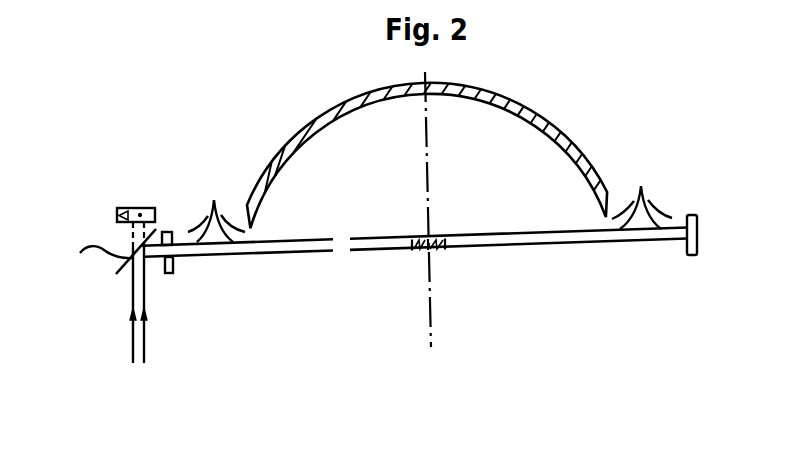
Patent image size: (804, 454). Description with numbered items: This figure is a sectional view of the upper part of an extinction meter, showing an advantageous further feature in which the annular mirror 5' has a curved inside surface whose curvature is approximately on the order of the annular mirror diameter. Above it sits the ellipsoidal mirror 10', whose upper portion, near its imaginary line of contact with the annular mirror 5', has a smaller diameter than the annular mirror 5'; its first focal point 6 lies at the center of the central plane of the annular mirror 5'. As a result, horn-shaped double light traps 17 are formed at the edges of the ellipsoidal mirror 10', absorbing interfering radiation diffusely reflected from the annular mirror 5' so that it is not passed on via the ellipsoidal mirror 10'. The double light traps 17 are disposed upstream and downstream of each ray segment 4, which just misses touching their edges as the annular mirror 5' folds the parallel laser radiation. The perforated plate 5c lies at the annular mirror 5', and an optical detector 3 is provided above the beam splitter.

The optical detector 3 is at (122, 222).
The ray segment 4 is at (414, 247).
The annular mirror 5' is at (434, 222).
The perforated plate 5c is at (175, 258).
The first focal point 6 is at (430, 229).
The ellipsoidal mirror 10' is at (427, 155).
The double light trap 17 is at (213, 203).